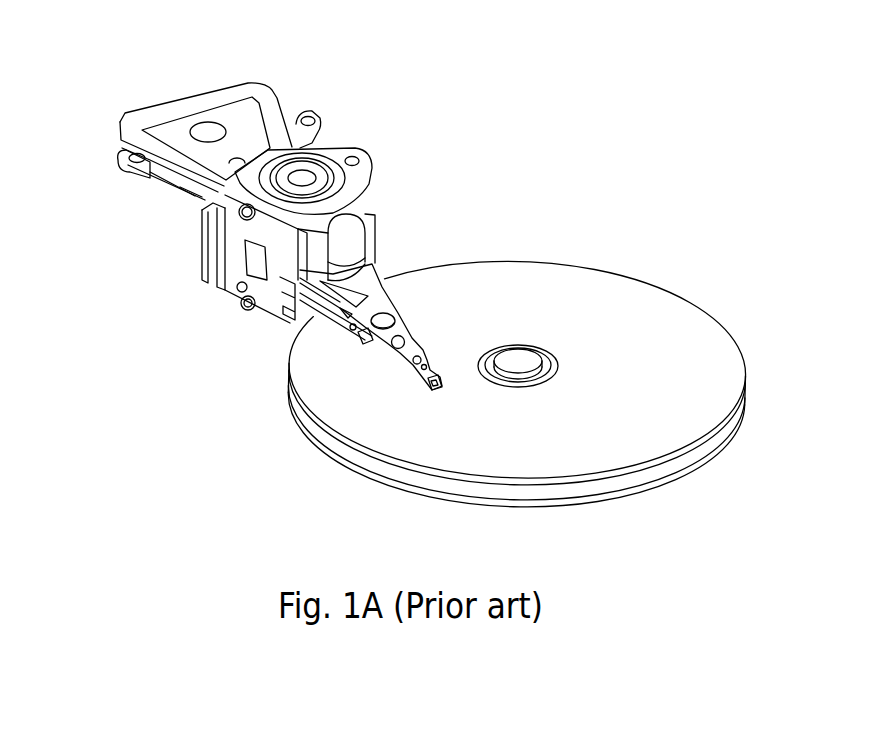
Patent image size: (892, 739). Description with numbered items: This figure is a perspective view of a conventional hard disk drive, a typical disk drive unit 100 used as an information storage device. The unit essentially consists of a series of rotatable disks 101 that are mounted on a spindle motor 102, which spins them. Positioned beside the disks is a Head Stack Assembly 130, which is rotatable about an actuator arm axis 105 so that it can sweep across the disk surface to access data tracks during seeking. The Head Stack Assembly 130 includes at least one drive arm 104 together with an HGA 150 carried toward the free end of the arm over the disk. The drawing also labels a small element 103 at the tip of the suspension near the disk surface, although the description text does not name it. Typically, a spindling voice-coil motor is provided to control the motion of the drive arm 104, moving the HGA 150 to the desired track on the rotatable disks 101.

The disk drive unit 100 is at (72, 31).
The rotatable disks 101 is at (635, 350).
The spindle motor 102 is at (523, 360).
The slider 103 is at (435, 380).
The drive arm 104 is at (382, 298).
The actuator arm axis 105 is at (303, 178).
The head stack assembly 130 is at (364, 212).
The HGA 150 is at (410, 343).